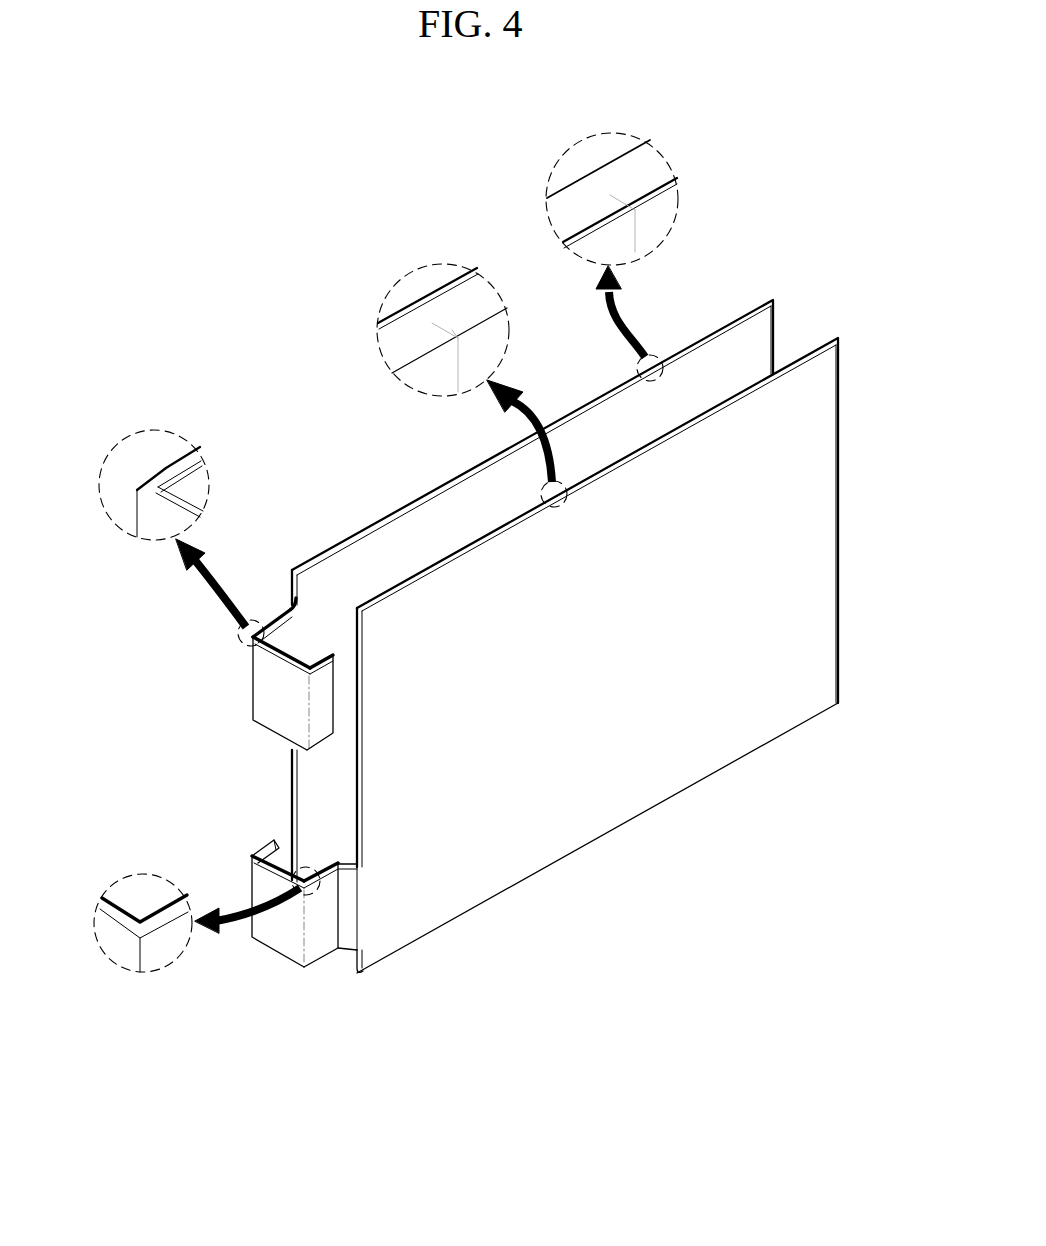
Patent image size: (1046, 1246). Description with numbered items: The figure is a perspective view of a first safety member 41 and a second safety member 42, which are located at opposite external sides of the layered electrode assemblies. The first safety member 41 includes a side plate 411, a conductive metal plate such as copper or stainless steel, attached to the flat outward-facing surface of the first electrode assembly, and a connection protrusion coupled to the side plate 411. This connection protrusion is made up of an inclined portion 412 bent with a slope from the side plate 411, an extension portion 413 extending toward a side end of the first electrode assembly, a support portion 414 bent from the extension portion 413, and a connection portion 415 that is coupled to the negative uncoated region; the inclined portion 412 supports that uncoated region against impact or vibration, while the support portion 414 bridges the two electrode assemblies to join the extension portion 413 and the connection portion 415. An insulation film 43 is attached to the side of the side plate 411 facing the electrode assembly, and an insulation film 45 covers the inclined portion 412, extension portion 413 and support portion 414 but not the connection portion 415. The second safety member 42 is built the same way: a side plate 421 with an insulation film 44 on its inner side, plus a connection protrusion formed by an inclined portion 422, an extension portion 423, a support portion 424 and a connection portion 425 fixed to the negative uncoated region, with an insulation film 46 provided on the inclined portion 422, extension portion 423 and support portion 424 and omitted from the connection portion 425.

The first safety member 41 is at (660, 808).
The side plate 411 is at (575, 828).
The inclined portion 412 is at (348, 910).
The extension portion 413 is at (324, 945).
The support portion 414 is at (278, 935).
The connection portion 415 is at (262, 855).
The second safety member 42 is at (414, 500).
The side plate 421 is at (365, 531).
The inclined portion 422 is at (276, 626).
The extension portion 423 is at (262, 622).
The support portion 424 is at (275, 690).
The connection portion 425 is at (322, 722).
The insulation film 43 is at (420, 302).
The insulation film 44 is at (650, 200).
The insulation film 45 is at (127, 900).
The insulation film 46 is at (187, 498).